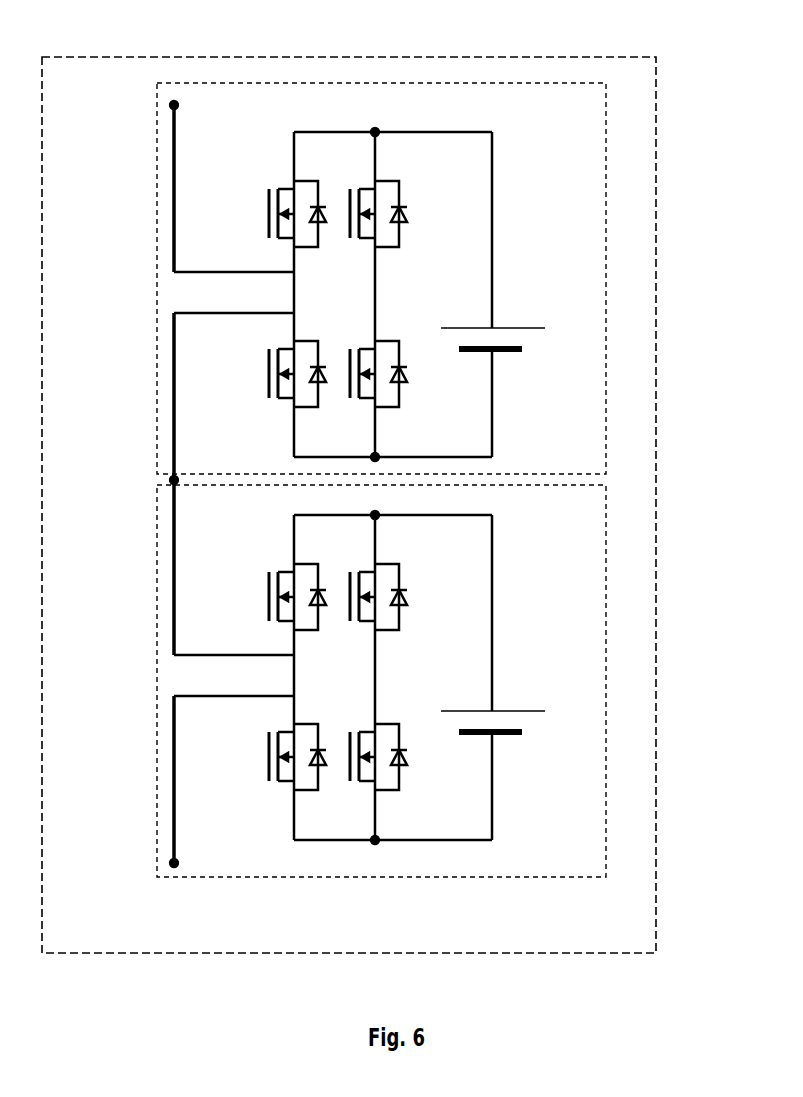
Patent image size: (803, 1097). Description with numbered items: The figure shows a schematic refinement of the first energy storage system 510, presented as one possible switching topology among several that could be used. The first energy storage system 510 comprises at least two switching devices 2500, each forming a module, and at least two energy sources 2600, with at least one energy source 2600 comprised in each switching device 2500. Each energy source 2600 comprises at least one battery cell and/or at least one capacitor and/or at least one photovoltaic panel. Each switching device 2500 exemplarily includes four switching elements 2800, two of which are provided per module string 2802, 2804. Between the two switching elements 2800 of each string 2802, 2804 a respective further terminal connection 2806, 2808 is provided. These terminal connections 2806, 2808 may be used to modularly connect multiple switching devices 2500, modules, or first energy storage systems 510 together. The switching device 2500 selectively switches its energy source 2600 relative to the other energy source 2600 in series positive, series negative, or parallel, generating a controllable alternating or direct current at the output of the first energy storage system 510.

The first energy storage system 510 is at (493, 58).
The switching device 2500 is at (230, 79).
The energy source 2600 is at (545, 328).
The switching element 2800 is at (303, 178).
The module string 2802 is at (292, 257).
The module string 2804 is at (375, 278).
The terminal connection 2806 is at (168, 193).
The terminal connection 2808 is at (168, 417).